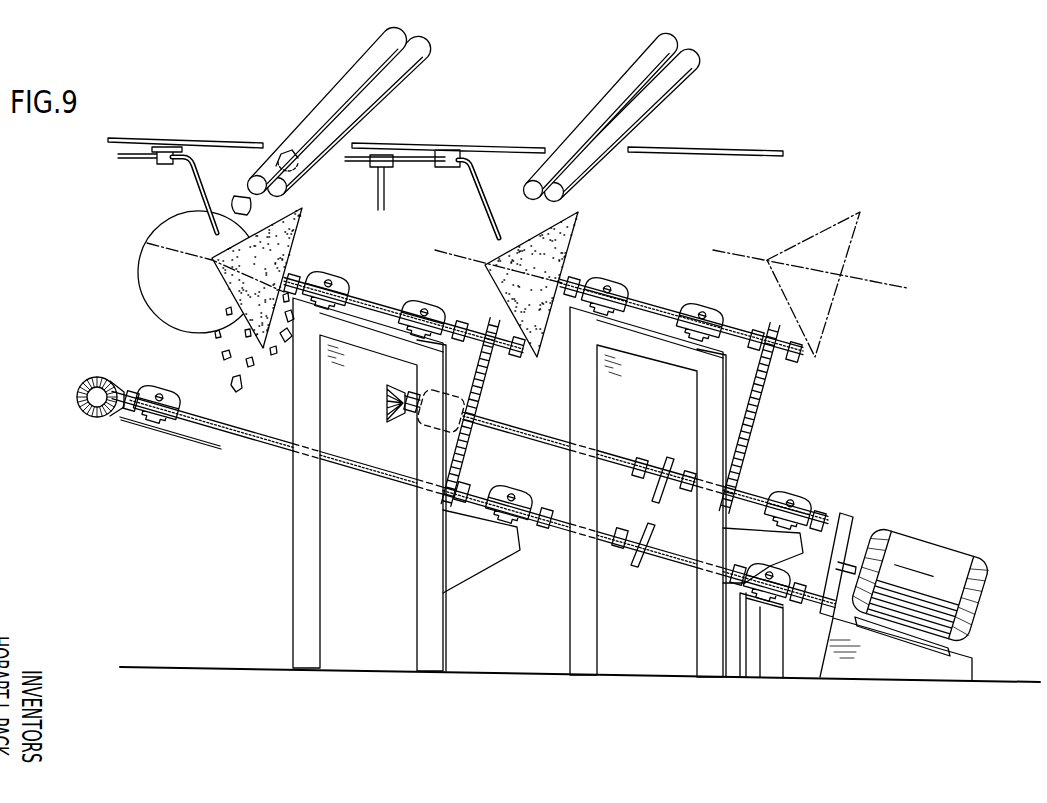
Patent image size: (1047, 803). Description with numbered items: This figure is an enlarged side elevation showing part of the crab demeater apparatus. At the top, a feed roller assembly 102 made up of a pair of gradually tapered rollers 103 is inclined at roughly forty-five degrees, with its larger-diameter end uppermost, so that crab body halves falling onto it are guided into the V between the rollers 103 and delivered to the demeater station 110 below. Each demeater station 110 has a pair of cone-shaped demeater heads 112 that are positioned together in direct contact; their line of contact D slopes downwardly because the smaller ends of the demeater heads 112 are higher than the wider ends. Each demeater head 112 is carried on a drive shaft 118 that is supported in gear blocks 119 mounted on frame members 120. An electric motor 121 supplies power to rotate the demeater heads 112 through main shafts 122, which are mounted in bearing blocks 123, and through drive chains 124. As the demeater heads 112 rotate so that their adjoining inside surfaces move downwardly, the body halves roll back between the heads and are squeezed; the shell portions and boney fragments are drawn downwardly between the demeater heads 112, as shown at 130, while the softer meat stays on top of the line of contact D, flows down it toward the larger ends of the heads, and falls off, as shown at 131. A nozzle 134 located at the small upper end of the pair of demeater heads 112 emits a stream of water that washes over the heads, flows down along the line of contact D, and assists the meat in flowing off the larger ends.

The feed roller assembly 102 is at (483, 121).
The rollers 103 is at (318, 106).
The demeater station 110 is at (318, 246).
The demeater head 112 is at (172, 315).
The drive shaft 118 is at (373, 298).
The gear blocks 119 is at (352, 273).
The frame members 120 is at (591, 395).
The electric motor 121 is at (922, 540).
The main shafts 122 is at (680, 560).
The bearing blocks 123 is at (155, 388).
The drive chains 124 is at (483, 393).
The shell portions and boney fragments 130 is at (232, 385).
The meat 131 is at (254, 334).
The nozzle 134 is at (196, 191).
The line of contact D is at (150, 243).